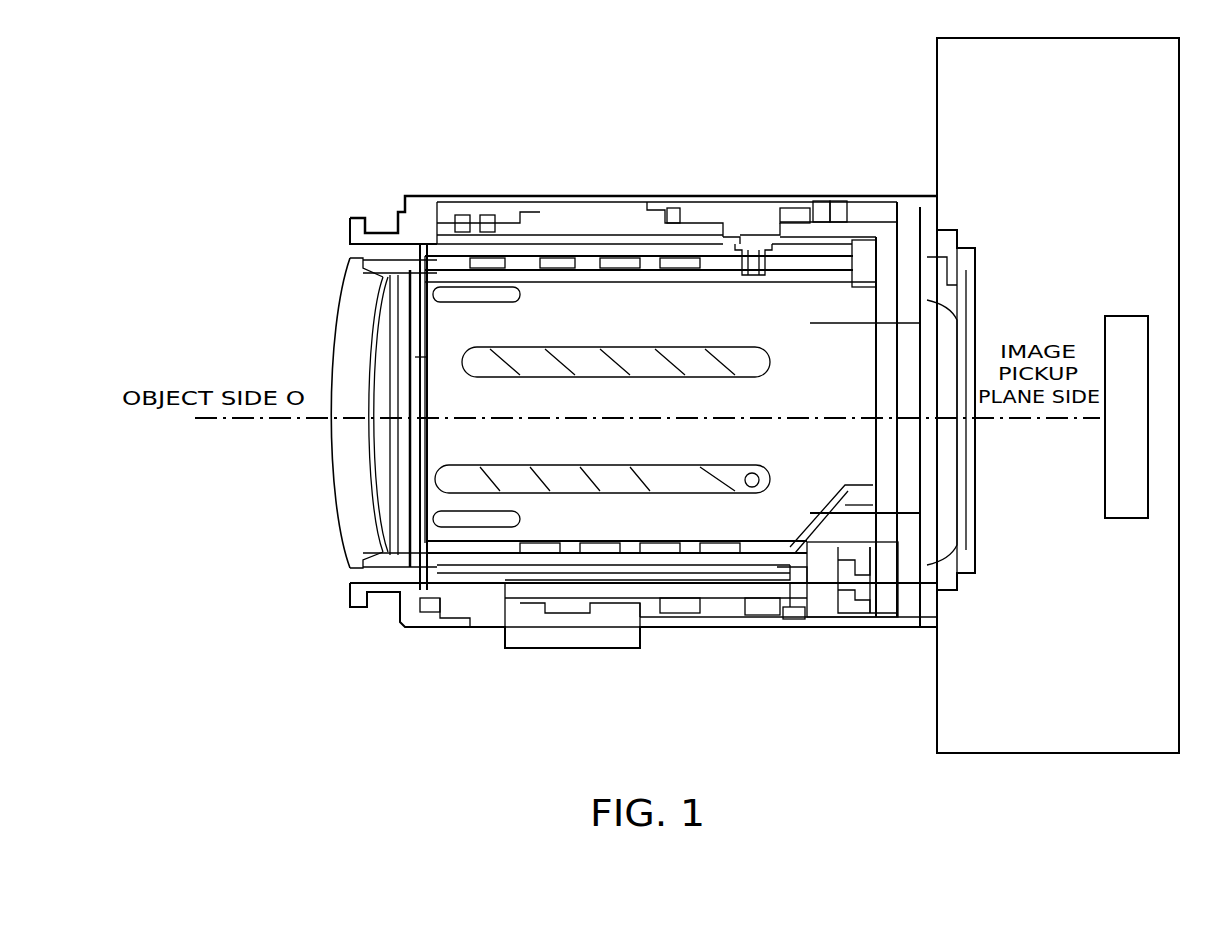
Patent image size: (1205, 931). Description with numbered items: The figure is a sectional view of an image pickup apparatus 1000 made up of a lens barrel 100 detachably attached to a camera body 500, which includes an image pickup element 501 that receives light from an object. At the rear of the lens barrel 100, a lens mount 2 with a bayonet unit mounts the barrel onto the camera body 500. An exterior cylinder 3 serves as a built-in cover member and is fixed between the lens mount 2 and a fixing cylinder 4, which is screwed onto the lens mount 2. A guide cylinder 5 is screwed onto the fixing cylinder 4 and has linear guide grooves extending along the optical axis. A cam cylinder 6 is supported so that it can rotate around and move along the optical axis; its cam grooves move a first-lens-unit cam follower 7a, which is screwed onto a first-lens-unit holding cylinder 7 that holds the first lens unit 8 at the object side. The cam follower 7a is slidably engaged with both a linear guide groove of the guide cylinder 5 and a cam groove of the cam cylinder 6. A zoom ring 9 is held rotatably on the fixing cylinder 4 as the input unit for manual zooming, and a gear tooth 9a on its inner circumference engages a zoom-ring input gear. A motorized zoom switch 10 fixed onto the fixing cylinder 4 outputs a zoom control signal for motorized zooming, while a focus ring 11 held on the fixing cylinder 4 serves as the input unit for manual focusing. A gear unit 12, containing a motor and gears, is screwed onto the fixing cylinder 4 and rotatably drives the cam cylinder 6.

The image pickup apparatus 1000 is at (310, 108).
The lens barrel 100 is at (378, 186).
The camera body 500 is at (967, 38).
The image pickup element 501 is at (1112, 318).
The lens mount 2 is at (947, 262).
The exterior cylinder 3 is at (905, 207).
The fixing cylinder 4 is at (838, 230).
The guide cylinder 5 is at (628, 553).
The cam cylinder 6 is at (588, 257).
The first-lens-unit holding cylinder 7 is at (397, 262).
The first-lens-unit cam follower 7a is at (766, 250).
The first lens unit 8 is at (363, 510).
The zoom ring 9 is at (727, 625).
The gear tooth 9a is at (793, 617).
The motorized zoom switch 10 is at (540, 637).
The focus ring 11 is at (463, 193).
The gear unit 12 is at (830, 603).